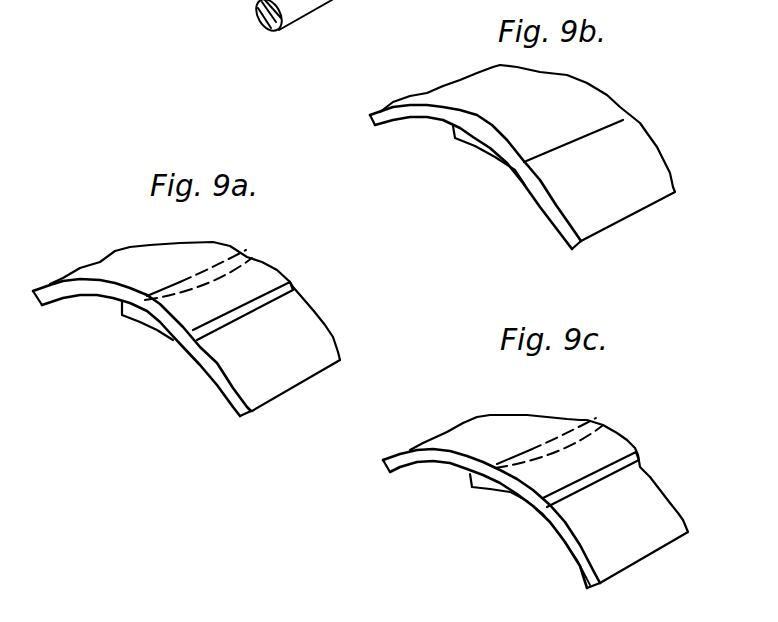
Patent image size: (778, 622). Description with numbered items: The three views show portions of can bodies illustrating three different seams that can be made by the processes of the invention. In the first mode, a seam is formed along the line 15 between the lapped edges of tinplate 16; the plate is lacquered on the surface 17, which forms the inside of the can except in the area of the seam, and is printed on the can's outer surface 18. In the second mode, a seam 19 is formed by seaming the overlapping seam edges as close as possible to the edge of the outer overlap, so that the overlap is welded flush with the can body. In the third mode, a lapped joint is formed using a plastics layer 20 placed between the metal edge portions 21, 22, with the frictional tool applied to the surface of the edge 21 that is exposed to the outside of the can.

In FIG. 9A, the seam line 15 is at (244, 254).
In FIG. 9A, the tinplate 16 is at (166, 326).
In FIG. 9A, the lacquered inside surface 17 is at (202, 362).
In FIG. 9A, the printed outer surface 18 is at (300, 343).
In FIG. 9B, the seam 19 is at (588, 122).
In FIG. 9C, the plastics layer 20 is at (482, 484).
In FIG. 9C, the metal edge portion 21 is at (492, 466).
In FIG. 9C, the metal edge portion 22 is at (503, 500).